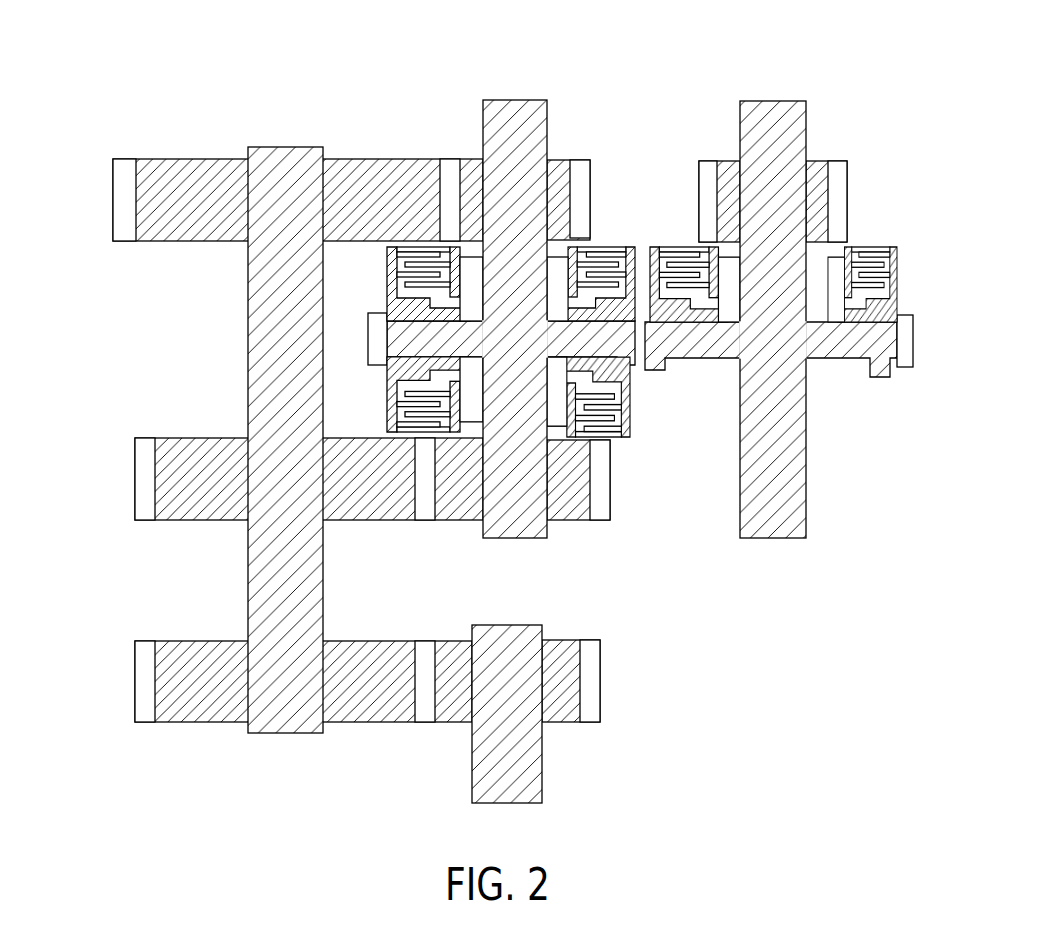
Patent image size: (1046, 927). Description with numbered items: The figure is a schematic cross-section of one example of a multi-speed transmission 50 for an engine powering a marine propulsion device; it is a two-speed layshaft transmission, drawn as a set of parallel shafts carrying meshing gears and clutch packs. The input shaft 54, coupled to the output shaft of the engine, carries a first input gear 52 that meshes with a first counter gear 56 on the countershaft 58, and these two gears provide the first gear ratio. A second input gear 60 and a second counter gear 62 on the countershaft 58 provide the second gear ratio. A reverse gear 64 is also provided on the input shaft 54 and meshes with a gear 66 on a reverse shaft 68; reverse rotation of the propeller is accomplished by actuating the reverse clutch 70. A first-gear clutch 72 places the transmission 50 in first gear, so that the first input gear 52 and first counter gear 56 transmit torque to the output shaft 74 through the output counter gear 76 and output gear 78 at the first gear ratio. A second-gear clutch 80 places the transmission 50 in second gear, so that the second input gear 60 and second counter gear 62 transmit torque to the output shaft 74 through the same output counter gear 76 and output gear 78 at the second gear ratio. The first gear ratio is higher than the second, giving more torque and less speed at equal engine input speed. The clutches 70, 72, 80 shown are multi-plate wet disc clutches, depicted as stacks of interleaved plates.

The multi-speed transmission 50 is at (108, 88).
The first input gear 52 is at (582, 168).
The input shaft 54 is at (495, 126).
The first counter gear 56 is at (125, 203).
The countershaft 58 is at (262, 352).
The second input gear 60 is at (600, 512).
The second counter gear 62 is at (145, 475).
The reverse gear 64 is at (375, 338).
The gear 66 is at (905, 350).
The reverse shaft 68 is at (793, 488).
The reverse clutch 70 is at (890, 270).
The first-gear clutch 72 is at (616, 254).
The output shaft 74 is at (530, 782).
The output counter gear 76 is at (145, 675).
The output gear 78 is at (590, 698).
The second-gear clutch 80 is at (622, 424).